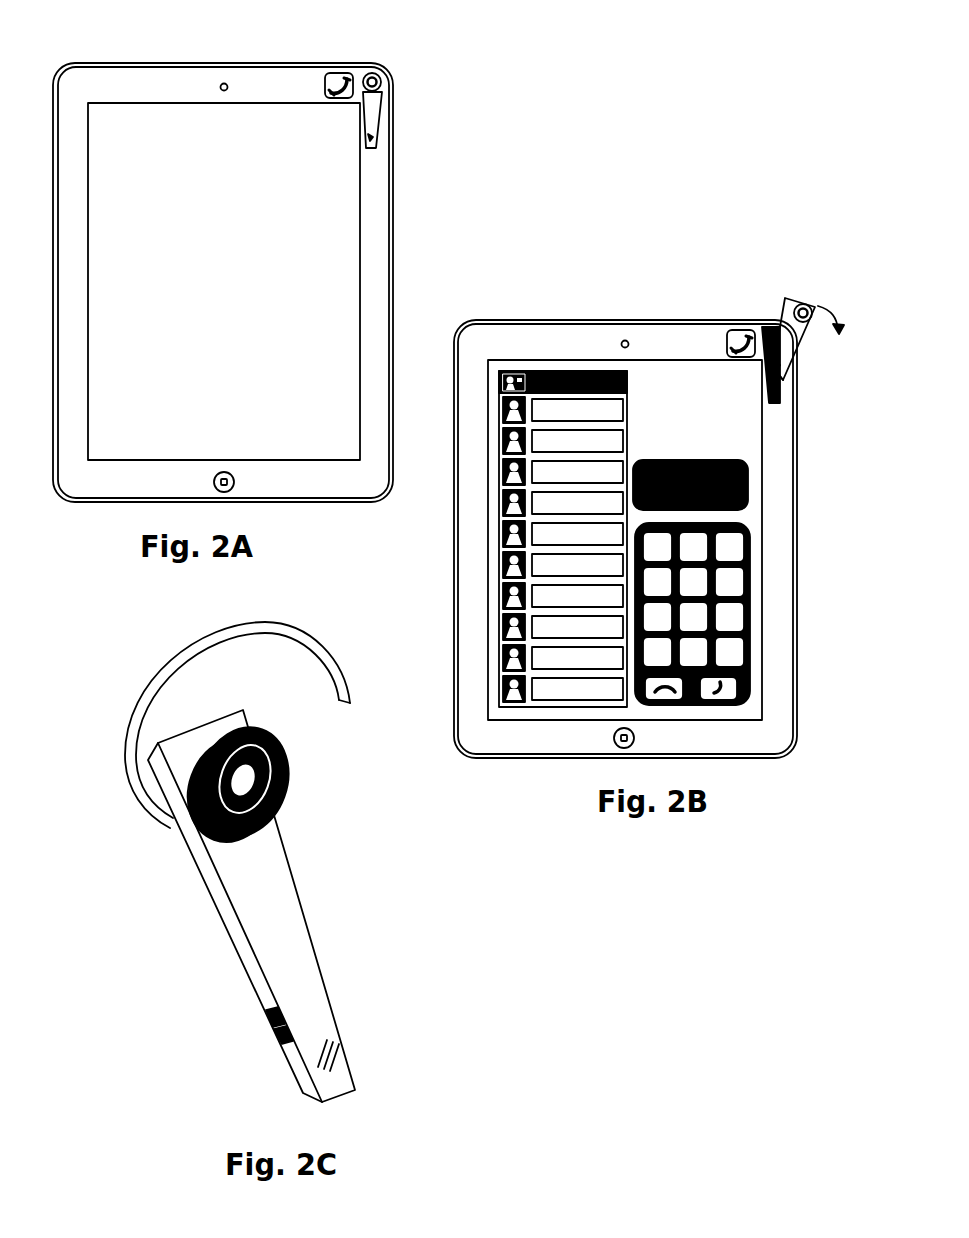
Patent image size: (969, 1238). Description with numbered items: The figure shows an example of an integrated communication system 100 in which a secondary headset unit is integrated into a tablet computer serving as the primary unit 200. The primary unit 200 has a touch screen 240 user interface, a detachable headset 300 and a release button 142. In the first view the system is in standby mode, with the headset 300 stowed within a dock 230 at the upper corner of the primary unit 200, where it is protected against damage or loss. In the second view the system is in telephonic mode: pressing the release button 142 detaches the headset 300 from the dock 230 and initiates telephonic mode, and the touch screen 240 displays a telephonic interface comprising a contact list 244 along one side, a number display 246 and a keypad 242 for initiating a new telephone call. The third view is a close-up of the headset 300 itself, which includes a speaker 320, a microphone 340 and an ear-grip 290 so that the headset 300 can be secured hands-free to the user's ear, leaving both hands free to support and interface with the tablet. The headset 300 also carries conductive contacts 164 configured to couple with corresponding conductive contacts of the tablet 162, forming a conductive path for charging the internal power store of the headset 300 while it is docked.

In FIG. 2A, the integrated communication system 100 is at (315, 269).
In FIG. 2A, the release button 142 is at (330, 75).
In FIG. 2B, the release button 142 is at (734, 330).
In FIG. 2B, the conductive contacts of the tablet 162 is at (767, 396).
In FIG. 2B, the conductive contacts 164 is at (781, 367).
In FIG. 2C, the conductive contacts 164 is at (267, 1020).
In FIG. 2A, the primary unit 200 is at (258, 269).
In FIG. 2B, the dock 230 is at (771, 327).
In FIG. 2A, the touch screen 240 is at (340, 288).
In FIG. 2B, the keypad 242 is at (749, 632).
In FIG. 2B, the contact list 244 is at (573, 369).
In FIG. 2B, the number display 246 is at (748, 503).
In FIG. 2C, the ear hook 290 is at (157, 684).
In FIG. 2A, the headset 300 is at (375, 113).
In FIG. 2B, the headset 300 is at (803, 300).
In FIG. 2C, the headset 300 is at (310, 874).
In FIG. 2C, the speaker 320 is at (292, 798).
In FIG. 2C, the microphone 340 is at (333, 1066).